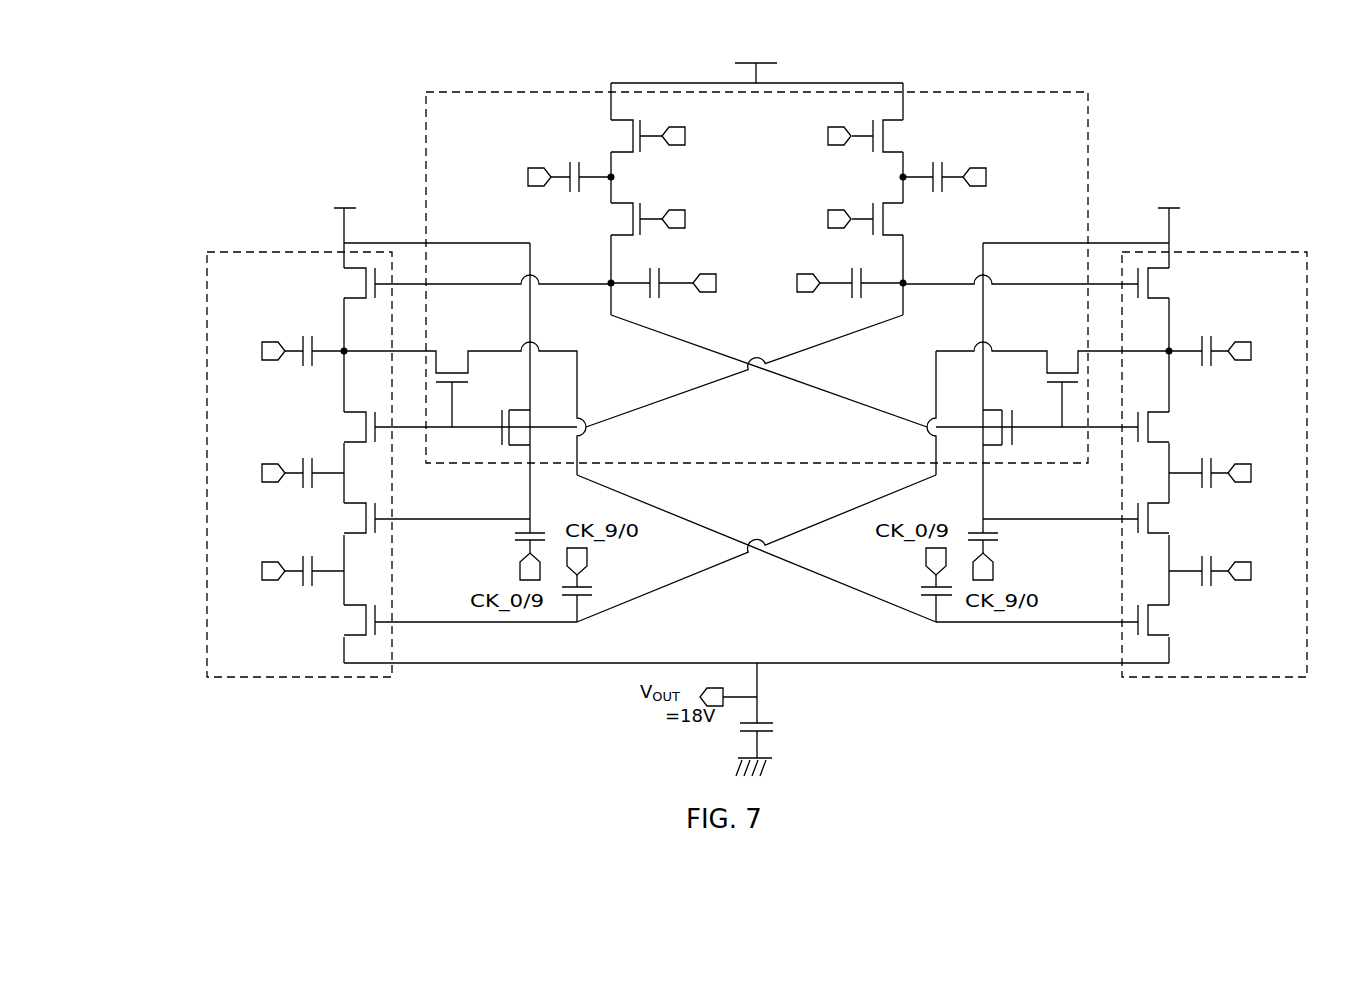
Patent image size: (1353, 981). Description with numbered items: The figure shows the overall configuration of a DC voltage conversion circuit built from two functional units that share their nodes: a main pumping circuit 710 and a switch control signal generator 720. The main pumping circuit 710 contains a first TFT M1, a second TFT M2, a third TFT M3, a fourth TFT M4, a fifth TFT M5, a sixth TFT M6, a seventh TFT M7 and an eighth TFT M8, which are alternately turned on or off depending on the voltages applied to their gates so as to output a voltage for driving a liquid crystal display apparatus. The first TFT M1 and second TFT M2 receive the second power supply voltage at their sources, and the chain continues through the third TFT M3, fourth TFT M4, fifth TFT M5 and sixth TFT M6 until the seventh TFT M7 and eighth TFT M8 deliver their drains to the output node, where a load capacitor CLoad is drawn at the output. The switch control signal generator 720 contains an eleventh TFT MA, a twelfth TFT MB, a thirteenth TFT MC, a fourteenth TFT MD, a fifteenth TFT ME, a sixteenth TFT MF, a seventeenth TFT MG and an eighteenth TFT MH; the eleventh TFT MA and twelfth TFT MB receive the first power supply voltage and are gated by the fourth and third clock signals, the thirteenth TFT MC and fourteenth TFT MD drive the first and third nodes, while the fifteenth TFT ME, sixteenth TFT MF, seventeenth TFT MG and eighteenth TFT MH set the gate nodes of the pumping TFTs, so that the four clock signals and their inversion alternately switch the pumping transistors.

The main pumping circuit 710 is at (244, 252).
The switch control signal generator 720 is at (981, 92).
The first TFT M1 is at (350, 283).
The second TFT M2 is at (1158, 283).
The third TFT M3 is at (350, 427).
The fourth TFT M4 is at (1158, 427).
The fifth TFT M5 is at (350, 518).
The sixth TFT M6 is at (1158, 518).
The seventh TFT M7 is at (350, 620).
The eighth TFT M8 is at (1158, 620).
The eleventh TFT MA is at (626, 136).
The twelfth TFT MB is at (884, 136).
The thirteenth TFT MC is at (626, 219).
The fourteenth TFT MD is at (884, 219).
The fifteenth TFT ME is at (510, 415).
The sixteenth TFT MF is at (998, 415).
The seventeenth TFT MG is at (452, 375).
The eighteenth TFT MH is at (1060, 375).
The load capacitor CLoad is at (784, 731).